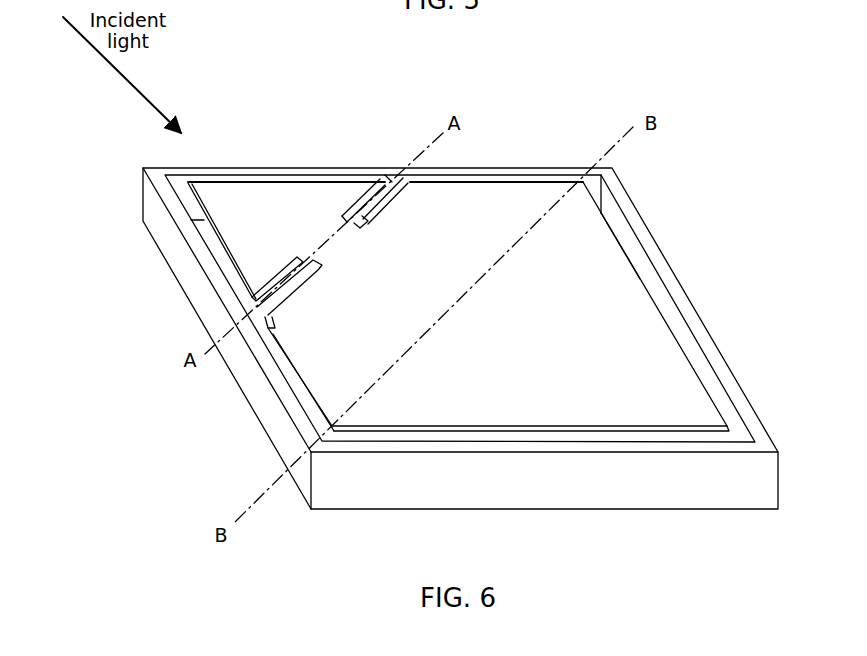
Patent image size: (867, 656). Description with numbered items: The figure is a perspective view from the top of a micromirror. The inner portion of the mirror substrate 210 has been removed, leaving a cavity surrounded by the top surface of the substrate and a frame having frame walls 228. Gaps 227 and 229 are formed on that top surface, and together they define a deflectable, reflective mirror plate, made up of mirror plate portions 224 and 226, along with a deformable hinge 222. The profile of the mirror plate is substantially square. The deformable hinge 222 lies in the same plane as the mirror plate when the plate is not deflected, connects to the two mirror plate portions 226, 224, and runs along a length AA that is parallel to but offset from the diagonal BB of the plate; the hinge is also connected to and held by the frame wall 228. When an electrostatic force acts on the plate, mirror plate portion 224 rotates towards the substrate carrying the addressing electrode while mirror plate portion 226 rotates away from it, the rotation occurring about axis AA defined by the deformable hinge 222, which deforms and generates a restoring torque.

The mirror substrate 210 is at (619, 494).
The deformable hinge 222 is at (383, 180).
The mirror plate portion 224 is at (467, 198).
The mirror plate portion 226 is at (236, 198).
The gap 227 is at (181, 184).
The frame wall 228 is at (643, 237).
The gap 229 is at (657, 292).